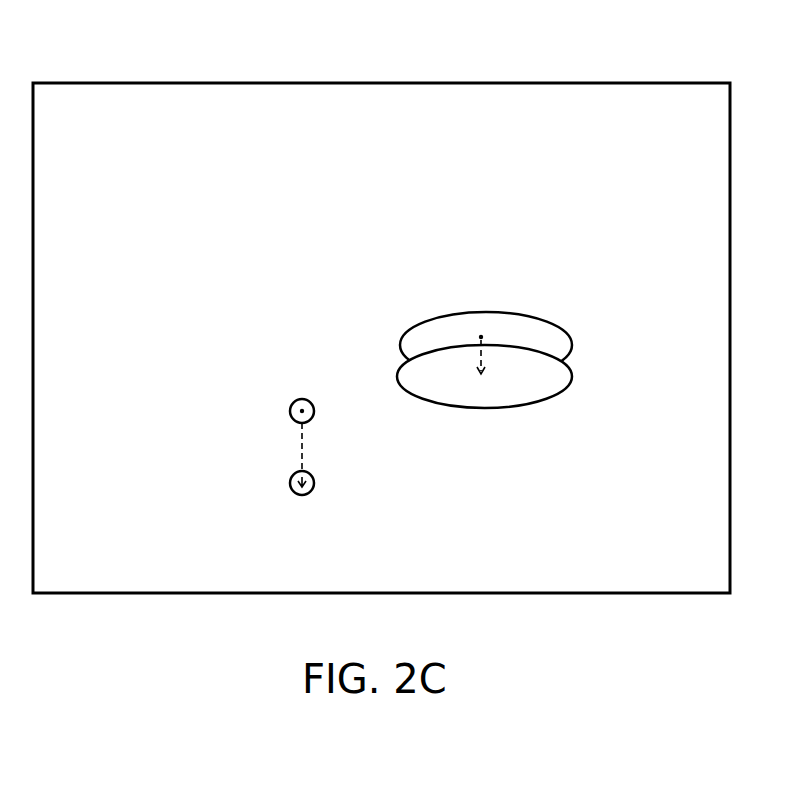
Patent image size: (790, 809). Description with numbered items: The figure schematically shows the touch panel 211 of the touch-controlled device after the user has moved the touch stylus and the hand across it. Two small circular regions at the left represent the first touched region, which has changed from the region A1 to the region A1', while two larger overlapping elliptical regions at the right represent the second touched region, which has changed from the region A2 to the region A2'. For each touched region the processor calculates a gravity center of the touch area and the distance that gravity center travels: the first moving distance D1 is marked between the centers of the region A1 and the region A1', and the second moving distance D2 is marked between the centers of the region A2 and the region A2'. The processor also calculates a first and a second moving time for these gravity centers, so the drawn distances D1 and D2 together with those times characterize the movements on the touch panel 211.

The touch panel 211 is at (310, 82).
The region A1 is at (278, 429).
The region A1' is at (278, 503).
The region A2 is at (512, 351).
The region A2' is at (484, 396).
The first moving distance D1 is at (318, 410).
The second moving distance D2 is at (490, 336).